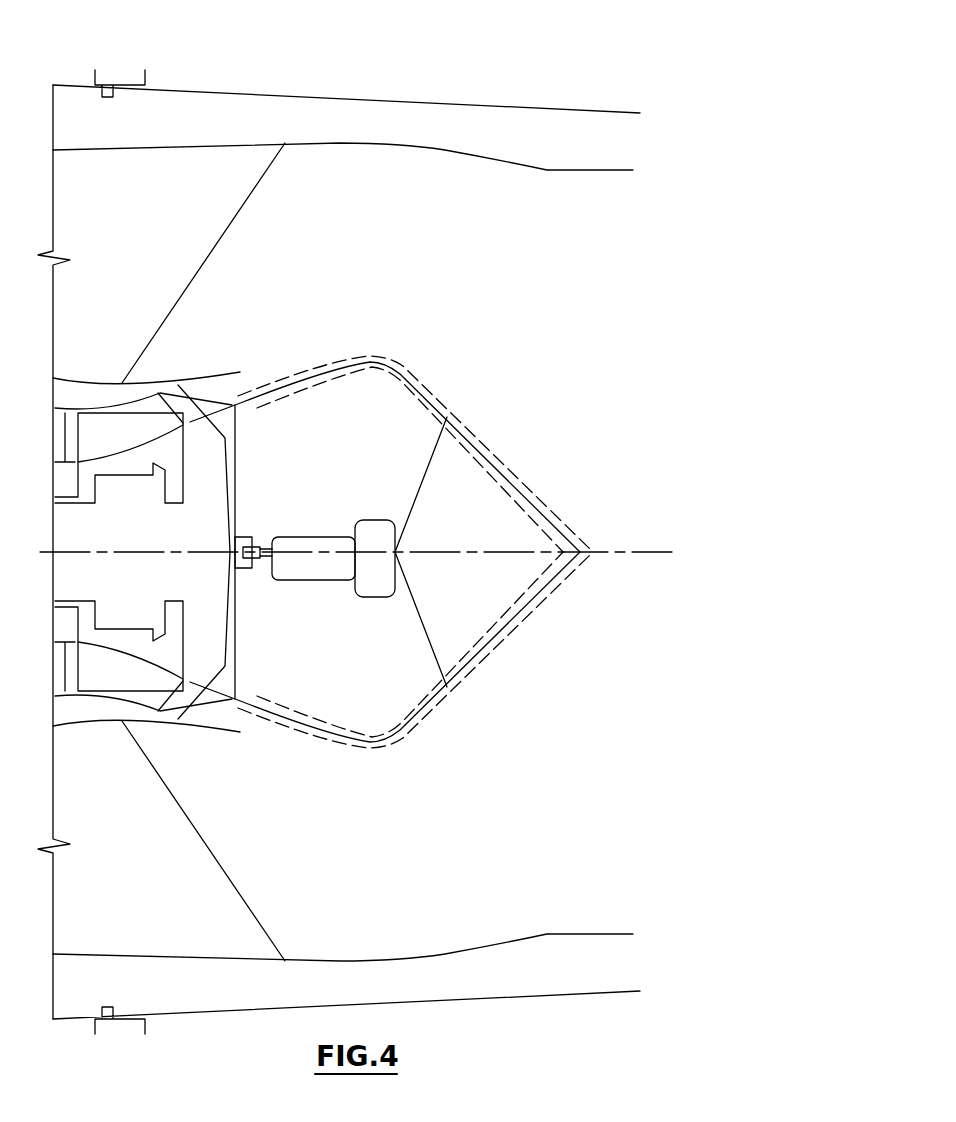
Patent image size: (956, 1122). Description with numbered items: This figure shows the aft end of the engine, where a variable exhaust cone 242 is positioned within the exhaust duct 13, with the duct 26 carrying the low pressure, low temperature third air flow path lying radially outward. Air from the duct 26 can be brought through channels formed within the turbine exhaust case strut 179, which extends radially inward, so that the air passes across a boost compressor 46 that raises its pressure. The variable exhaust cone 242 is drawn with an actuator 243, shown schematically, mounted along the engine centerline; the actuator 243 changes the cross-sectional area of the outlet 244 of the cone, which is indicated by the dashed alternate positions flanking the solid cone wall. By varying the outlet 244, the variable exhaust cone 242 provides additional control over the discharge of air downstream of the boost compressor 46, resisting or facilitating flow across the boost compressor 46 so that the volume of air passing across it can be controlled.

The duct 26 is at (213, 127).
The exhaust duct 13 is at (455, 150).
The turbine exhaust case strut 179 is at (140, 237).
The boost compressor 46 is at (128, 442).
The variable exhaust cone 242 is at (515, 380).
The outlet 244 is at (238, 390).
The actuator 243 is at (320, 552).